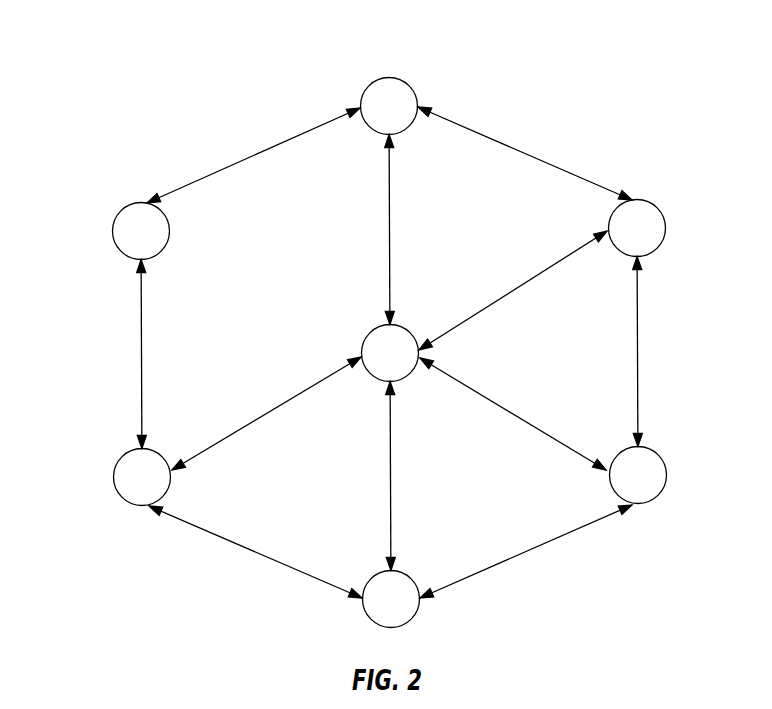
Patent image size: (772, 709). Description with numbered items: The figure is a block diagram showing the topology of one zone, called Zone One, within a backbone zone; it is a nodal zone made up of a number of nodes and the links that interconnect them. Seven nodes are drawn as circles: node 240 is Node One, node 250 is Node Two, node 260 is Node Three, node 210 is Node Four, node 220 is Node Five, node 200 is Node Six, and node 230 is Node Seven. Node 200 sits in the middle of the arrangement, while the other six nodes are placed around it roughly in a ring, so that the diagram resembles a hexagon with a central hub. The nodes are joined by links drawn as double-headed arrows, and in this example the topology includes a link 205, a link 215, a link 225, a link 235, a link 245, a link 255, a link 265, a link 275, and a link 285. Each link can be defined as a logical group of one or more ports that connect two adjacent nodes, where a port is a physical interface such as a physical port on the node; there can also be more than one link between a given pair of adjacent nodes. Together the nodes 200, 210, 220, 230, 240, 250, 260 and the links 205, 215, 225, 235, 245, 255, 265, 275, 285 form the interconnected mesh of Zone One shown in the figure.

The node 200 is at (363, 335).
The node 210 is at (113, 230).
The node 220 is at (390, 78).
The node 230 is at (666, 227).
The node 240 is at (667, 474).
The node 250 is at (413, 579).
The node 260 is at (115, 477).
The link 205 is at (139, 350).
The link 215 is at (277, 143).
The link 225 is at (513, 148).
The link 235 is at (390, 233).
The link 245 is at (268, 412).
The link 255 is at (233, 543).
The link 265 is at (537, 550).
The link 275 is at (510, 410).
The link 285 is at (639, 345).